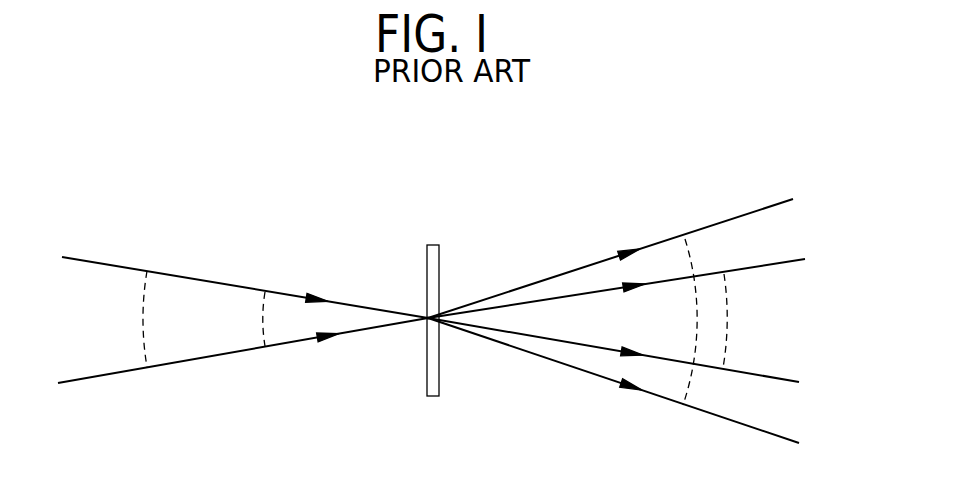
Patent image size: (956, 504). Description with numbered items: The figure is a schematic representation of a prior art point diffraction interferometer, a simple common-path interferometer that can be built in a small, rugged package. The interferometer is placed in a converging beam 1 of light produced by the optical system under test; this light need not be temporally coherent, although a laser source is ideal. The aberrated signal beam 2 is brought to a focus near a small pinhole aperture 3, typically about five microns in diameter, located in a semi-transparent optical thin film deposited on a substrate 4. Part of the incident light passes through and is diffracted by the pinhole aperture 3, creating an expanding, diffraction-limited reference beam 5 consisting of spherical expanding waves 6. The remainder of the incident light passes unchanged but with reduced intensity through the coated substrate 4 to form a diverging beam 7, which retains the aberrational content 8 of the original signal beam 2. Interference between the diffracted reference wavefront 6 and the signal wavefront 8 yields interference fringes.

The converging beam 1 is at (115, 266).
The aberrated signal beam 2 is at (141, 303).
The pinhole aperture 3 is at (426, 324).
The substrate 4 is at (433, 243).
The reference beam 5 is at (733, 218).
The spherical expanding waves 6 is at (688, 387).
The diverging beam 7 is at (770, 263).
The aberrational content 8 is at (727, 343).